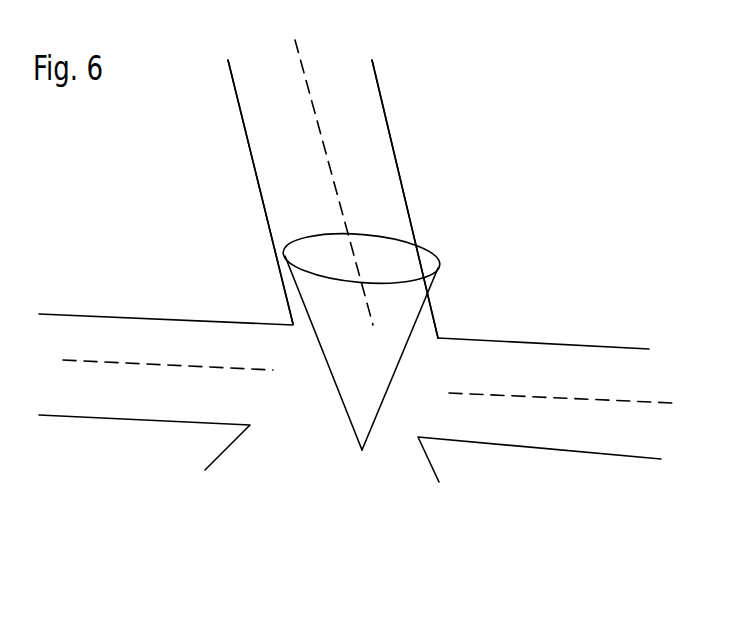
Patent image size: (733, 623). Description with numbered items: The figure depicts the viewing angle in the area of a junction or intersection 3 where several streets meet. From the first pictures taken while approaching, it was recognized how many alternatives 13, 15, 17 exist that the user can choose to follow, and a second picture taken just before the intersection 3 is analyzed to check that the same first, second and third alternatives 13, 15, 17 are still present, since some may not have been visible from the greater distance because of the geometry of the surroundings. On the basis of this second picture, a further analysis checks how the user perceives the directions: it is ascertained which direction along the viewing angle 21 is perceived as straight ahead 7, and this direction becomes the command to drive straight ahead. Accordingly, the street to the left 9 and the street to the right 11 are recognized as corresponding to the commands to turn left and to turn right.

The junction/intersection 3 is at (484, 225).
The straight ahead 7 is at (375, 157).
The second alternative 15 is at (282, 160).
The viewing angle 21 is at (394, 303).
The street to the left 9 is at (176, 342).
The street to the right 11 is at (584, 372).
The first alternative 13 is at (150, 403).
The third alternative 17 is at (573, 437).